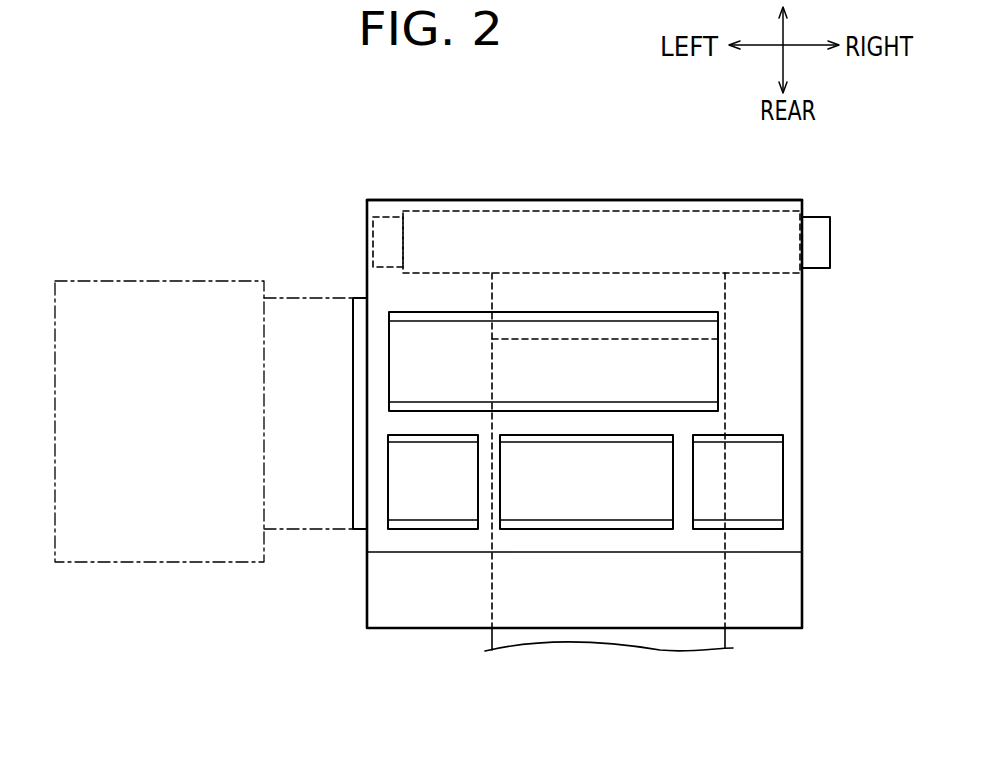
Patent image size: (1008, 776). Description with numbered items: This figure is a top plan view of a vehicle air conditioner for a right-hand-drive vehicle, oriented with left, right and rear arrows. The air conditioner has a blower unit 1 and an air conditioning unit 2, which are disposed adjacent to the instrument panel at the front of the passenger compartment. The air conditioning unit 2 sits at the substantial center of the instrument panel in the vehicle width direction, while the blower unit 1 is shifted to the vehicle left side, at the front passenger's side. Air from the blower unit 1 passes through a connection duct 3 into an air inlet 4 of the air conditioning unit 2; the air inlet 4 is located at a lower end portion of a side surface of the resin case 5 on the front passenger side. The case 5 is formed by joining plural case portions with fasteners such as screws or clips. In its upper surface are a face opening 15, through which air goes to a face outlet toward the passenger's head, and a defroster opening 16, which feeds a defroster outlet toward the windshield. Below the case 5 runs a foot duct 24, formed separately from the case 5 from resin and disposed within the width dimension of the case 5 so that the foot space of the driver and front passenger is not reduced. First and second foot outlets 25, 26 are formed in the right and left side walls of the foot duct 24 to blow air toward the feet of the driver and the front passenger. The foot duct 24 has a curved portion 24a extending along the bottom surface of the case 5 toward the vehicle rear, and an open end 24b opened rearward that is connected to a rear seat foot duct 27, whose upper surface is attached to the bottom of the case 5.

The blower unit 1 is at (178, 278).
The air conditioning unit 2 is at (456, 194).
The connection duct 3 is at (294, 297).
The air inlet 4 is at (356, 297).
The case 5 is at (640, 200).
The face opening 15 is at (408, 492).
The defroster opening 16 is at (678, 395).
The foot duct 24 is at (526, 210).
The curved portion 24a is at (725, 300).
The open end 24b is at (675, 339).
The first foot outlet 25 is at (372, 222).
The second foot outlet 26 is at (812, 216).
The rear seat foot duct 27 is at (725, 378).